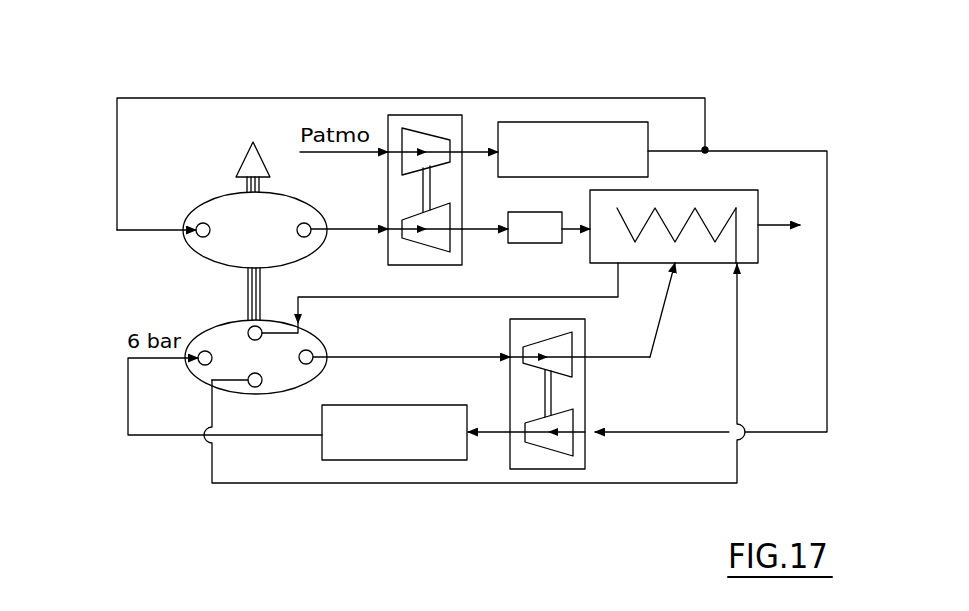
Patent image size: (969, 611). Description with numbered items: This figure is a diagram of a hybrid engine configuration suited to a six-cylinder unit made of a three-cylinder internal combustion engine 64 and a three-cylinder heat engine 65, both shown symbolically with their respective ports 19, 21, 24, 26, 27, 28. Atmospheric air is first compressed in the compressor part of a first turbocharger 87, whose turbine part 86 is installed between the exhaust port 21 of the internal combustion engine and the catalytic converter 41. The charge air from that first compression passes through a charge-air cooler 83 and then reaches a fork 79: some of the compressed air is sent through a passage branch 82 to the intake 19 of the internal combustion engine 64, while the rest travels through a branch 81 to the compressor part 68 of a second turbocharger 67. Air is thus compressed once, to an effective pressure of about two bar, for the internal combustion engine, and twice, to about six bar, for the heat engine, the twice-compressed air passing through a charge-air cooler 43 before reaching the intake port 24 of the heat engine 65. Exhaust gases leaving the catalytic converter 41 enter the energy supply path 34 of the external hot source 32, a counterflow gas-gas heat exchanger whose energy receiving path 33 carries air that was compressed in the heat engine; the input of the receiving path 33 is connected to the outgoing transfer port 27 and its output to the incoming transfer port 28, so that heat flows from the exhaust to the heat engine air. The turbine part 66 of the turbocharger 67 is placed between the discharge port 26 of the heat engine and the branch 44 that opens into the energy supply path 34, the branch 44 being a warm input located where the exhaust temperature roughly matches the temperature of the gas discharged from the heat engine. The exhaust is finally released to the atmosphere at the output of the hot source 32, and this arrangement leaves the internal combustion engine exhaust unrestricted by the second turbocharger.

The intake port of the internal combustion engine 19 is at (197, 220).
The exhaust port of the internal combustion engine 21 is at (306, 222).
The intake port of the heat engine 24 is at (202, 352).
The discharge port of the heat engine 26 is at (315, 338).
The outgoing transfer port 27 is at (258, 392).
The incoming transfer port 28 is at (248, 327).
The external hot source 32 is at (763, 270).
The energy receiving path 33 is at (705, 225).
The energy supply path 34 is at (657, 205).
The catalytic converter 41 is at (528, 245).
The charge-air cooler 43 is at (383, 462).
The branch 44 is at (697, 268).
The internal combustion engine 64 is at (190, 250).
The heat engine 65 is at (192, 378).
The turbine part of the turbocharger 66 is at (585, 343).
The turbocharger 67 is at (587, 460).
The compressor part of the turbocharger 68 is at (545, 453).
The fork 79 is at (706, 148).
The branch 81 is at (785, 150).
The passage branch 82 is at (268, 96).
The charge-air cooler 83 is at (558, 122).
The turbine part of the first turbocharger 86 is at (423, 245).
The first turbocharger 87 is at (425, 113).